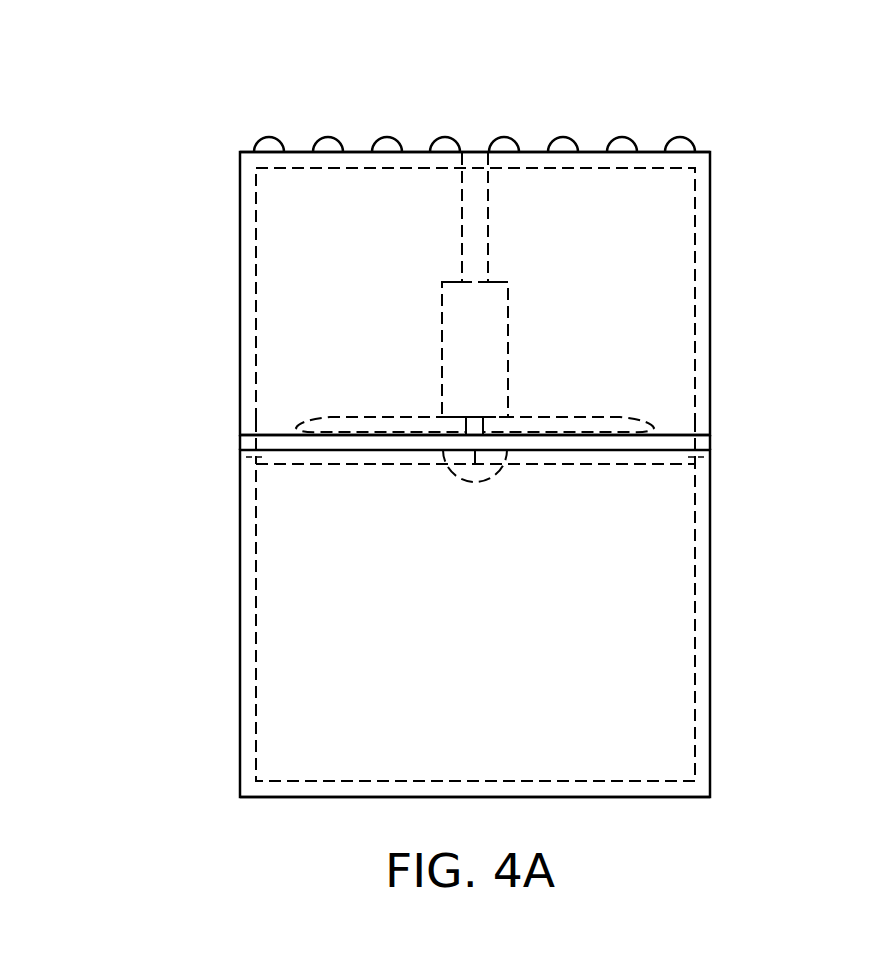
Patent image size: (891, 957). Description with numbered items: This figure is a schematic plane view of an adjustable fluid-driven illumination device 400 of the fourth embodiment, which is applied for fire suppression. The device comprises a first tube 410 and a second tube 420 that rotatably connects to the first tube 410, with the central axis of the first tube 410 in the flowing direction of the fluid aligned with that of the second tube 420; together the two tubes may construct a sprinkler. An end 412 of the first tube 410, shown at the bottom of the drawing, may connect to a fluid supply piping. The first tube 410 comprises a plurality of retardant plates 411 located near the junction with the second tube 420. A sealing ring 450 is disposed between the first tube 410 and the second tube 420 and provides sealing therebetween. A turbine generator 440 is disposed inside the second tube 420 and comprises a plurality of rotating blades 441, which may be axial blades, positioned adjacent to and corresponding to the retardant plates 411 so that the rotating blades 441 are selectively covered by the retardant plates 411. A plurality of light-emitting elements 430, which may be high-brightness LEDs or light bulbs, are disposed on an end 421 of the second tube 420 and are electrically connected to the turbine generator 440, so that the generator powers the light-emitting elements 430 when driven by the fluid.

The adjustable fluid-driven illumination device 400 is at (233, 63).
The first tube 410 is at (712, 618).
The retardant plates 411 is at (262, 457).
The end of the first tube 412 is at (652, 798).
The second tube 420 is at (712, 296).
The end of the second tube 421 is at (531, 150).
The light-emitting elements 430 is at (680, 137).
The turbine generator 440 is at (438, 327).
The rotating blades 441 is at (340, 425).
The sealing ring 450 is at (710, 443).